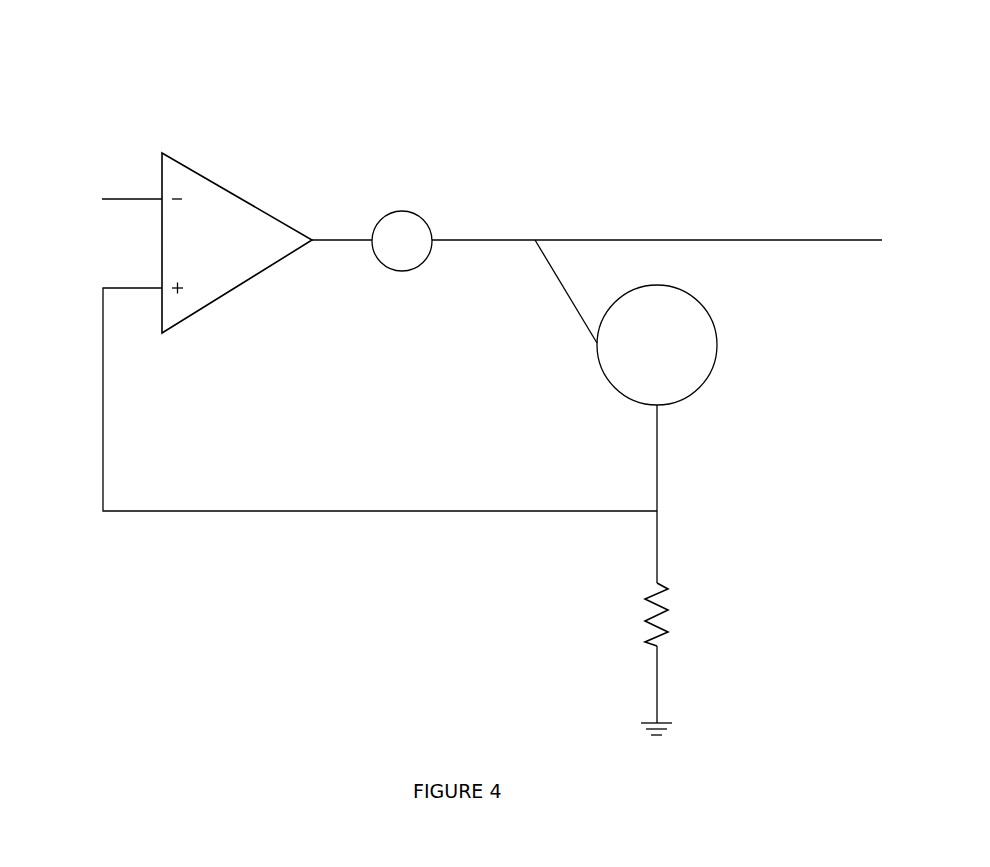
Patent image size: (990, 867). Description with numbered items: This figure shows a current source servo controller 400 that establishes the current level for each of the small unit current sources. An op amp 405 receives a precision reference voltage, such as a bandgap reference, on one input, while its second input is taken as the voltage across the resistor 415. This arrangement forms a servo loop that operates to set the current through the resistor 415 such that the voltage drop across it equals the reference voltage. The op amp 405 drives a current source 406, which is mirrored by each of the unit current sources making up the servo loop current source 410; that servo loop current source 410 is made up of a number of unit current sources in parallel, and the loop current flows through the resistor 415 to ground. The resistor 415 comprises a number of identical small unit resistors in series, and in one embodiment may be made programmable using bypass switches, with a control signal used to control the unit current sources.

The current source servo controller 400 is at (896, 53).
The op amp 405 is at (239, 251).
The current source 406 is at (401, 276).
The servo loop current source Iloop 410 is at (675, 396).
The resistor R2 415 is at (880, 256).